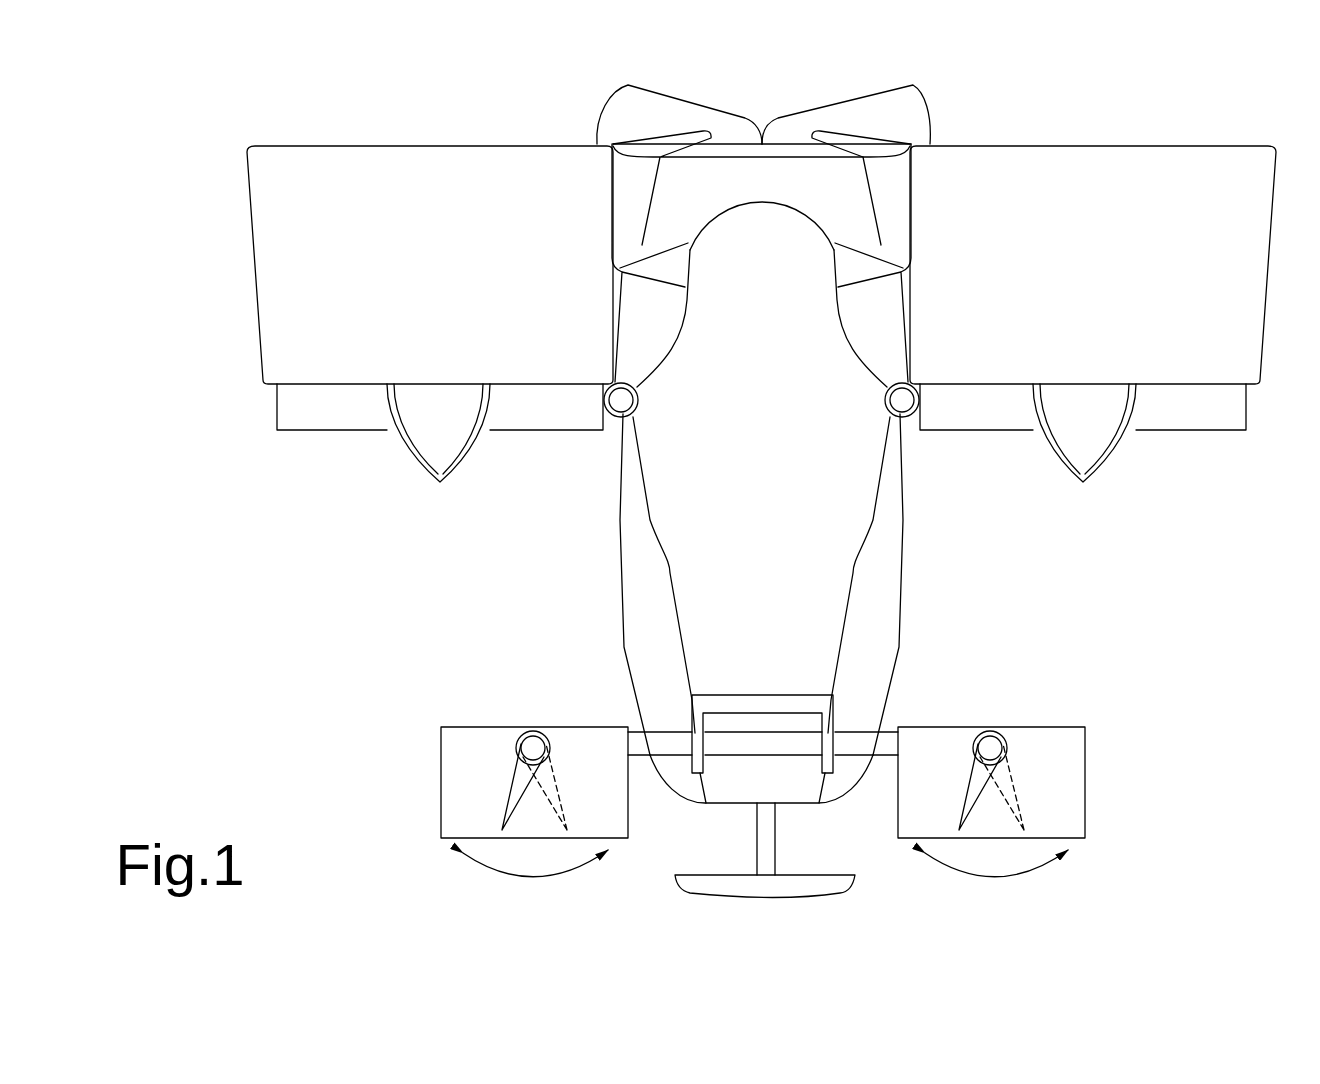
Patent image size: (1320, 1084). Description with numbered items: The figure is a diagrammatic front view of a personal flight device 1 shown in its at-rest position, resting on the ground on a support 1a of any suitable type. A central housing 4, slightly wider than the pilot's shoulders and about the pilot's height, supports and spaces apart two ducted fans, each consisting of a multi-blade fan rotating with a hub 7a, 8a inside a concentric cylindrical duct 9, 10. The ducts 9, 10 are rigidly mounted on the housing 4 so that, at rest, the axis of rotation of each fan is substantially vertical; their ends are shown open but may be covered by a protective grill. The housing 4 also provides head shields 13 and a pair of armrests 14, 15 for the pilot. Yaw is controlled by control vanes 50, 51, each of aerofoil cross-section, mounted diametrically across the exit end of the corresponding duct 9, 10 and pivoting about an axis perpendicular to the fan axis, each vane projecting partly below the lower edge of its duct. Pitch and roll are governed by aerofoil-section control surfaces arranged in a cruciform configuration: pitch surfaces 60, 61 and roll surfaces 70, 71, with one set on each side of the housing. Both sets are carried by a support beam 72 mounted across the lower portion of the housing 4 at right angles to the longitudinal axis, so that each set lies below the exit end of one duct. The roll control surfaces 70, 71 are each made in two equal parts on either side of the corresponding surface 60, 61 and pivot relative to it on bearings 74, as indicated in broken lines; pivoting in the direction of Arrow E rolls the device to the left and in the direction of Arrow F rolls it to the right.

The personal flight device 1 is at (405, 140).
The support 1a is at (722, 893).
The central housing 4 is at (761, 608).
The hub 7a is at (433, 455).
The hub 8a is at (1105, 450).
The cylindrical duct 9 is at (430, 265).
The cylindrical duct 10 is at (1093, 265).
The head shields 13 is at (764, 236).
The armrest 14 is at (640, 410).
The armrest 15 is at (886, 411).
The control vane 50 is at (315, 415).
The control vane 51 is at (968, 425).
The pitch control surface 60 is at (453, 783).
The pitch control surface 61 is at (1090, 778).
The roll control surface 70 is at (505, 842).
The roll control surface 71 is at (965, 842).
The support beam 72 is at (640, 742).
The bearings 74 is at (515, 735).